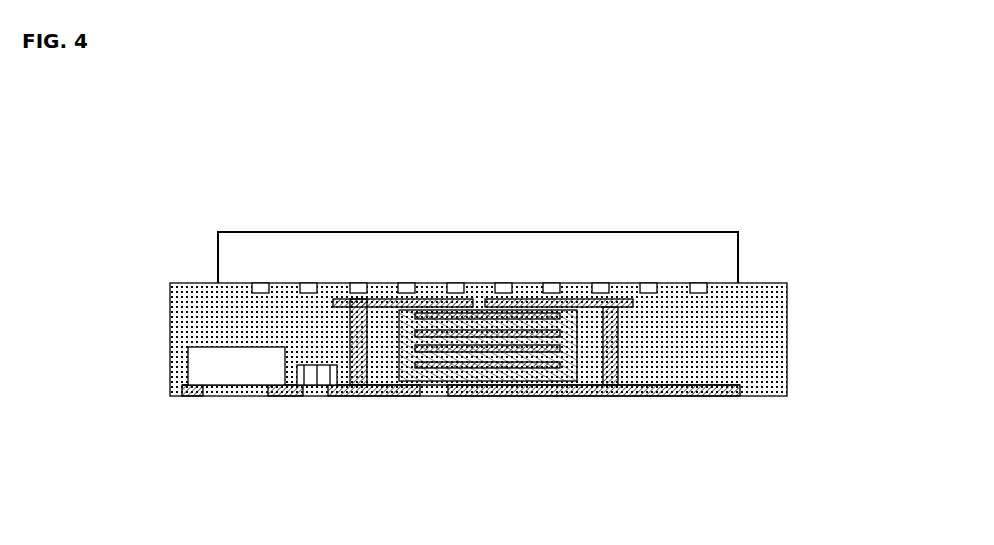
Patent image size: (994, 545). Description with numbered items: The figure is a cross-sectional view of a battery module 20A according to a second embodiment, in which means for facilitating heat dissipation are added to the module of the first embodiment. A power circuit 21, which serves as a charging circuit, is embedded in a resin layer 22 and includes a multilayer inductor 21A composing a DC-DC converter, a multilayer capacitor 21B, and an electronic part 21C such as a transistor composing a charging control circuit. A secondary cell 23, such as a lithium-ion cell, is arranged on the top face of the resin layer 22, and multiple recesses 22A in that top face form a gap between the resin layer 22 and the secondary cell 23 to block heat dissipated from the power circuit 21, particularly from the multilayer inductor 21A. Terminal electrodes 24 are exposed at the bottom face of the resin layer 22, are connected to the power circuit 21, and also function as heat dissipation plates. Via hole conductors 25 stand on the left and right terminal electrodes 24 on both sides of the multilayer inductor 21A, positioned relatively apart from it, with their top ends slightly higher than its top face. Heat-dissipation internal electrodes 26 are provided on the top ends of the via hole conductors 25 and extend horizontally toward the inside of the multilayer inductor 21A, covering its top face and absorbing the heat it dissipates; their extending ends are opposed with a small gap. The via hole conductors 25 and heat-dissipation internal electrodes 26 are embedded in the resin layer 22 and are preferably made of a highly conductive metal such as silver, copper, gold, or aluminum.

The battery module 20A is at (607, 163).
The power circuit 21 is at (437, 470).
The multilayer inductor 21A is at (435, 345).
The multilayer capacitor 21B is at (329, 372).
The electronic part 21C is at (249, 372).
The resin layer 22 is at (763, 335).
The recesses 22A is at (500, 284).
The secondary cell 23 is at (718, 257).
The terminal electrodes 24 is at (435, 390).
The via hole conductors 25 is at (357, 332).
The heat-dissipation internal electrodes 26 is at (462, 307).